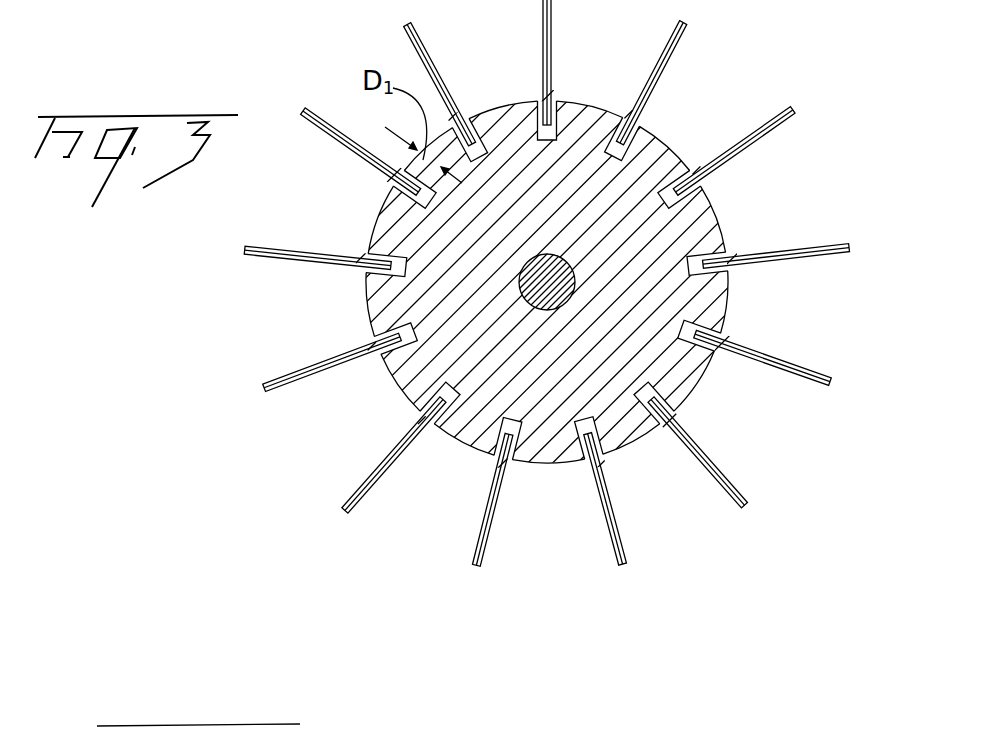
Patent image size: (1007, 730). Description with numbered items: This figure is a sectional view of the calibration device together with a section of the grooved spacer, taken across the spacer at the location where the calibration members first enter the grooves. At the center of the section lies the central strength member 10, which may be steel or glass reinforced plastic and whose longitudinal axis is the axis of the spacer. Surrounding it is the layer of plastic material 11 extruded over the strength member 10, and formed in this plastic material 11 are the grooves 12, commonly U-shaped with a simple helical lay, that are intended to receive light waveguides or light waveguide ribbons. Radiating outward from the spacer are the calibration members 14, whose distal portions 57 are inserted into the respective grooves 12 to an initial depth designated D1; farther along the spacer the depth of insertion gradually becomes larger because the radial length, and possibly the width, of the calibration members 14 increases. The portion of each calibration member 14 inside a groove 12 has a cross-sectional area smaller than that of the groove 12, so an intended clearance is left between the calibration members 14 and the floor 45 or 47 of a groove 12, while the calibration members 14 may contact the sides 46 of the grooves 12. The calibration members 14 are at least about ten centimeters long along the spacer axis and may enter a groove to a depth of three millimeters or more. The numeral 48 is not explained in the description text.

The central strength member 10 is at (553, 252).
The plastic material 11 is at (720, 307).
The grooves 12 is at (672, 203).
The calibration members 14 is at (682, 37).
The floor of a groove 45 is at (382, 262).
The sides of grooves 46 is at (382, 347).
The floor of a groove 47 is at (420, 408).
The blade slot 48 is at (470, 430).
The distal portions 57 is at (393, 193).